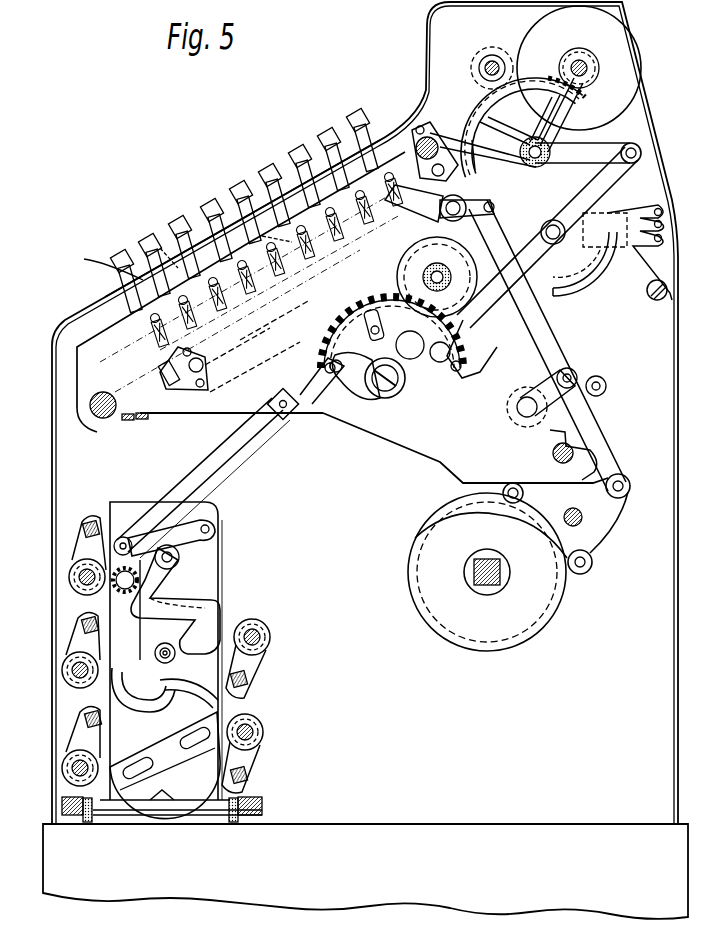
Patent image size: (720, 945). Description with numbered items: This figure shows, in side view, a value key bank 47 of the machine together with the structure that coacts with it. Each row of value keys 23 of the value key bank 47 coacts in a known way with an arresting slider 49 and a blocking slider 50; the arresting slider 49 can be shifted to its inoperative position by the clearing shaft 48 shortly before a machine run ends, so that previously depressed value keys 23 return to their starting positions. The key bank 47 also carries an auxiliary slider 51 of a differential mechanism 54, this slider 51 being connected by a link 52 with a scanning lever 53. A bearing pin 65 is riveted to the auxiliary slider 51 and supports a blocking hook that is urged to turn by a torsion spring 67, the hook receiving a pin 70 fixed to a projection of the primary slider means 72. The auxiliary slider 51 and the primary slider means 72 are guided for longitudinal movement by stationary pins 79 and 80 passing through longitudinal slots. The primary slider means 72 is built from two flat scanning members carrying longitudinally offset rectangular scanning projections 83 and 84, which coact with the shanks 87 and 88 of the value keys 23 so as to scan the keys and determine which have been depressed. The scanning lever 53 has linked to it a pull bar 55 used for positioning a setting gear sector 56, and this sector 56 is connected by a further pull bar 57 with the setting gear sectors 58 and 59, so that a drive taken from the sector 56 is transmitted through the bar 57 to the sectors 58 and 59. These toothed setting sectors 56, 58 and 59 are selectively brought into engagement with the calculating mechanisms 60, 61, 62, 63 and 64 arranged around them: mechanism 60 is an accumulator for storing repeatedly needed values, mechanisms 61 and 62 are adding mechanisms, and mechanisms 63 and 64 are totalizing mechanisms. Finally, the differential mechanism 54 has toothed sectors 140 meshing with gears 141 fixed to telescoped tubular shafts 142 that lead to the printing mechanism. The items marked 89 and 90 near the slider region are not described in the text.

The value keys 23 is at (340, 118).
The value key bank 47 is at (85, 370).
The clearing shaft 48 is at (430, 135).
The arresting slider 49 is at (167, 241).
The blocking slider 50 is at (274, 259).
The auxiliary slider 51 is at (318, 366).
The link 52 is at (290, 427).
The scanning lever 53 is at (350, 390).
The differential mechanism 54 is at (383, 398).
The pull bar 55 is at (227, 467).
The setting gear sector 56 is at (118, 602).
The pull bar 57 is at (143, 638).
The setting gear sector 58 is at (223, 608).
The setting gear sector 59 is at (217, 717).
The calculating mechanism 60 is at (68, 572).
The calculating mechanism 61 is at (63, 666).
The calculating mechanism 62 is at (270, 635).
The calculating mechanism 63 is at (63, 770).
The calculating mechanism 64 is at (264, 740).
The bearing pin 65 is at (255, 440).
The torsion spring 67 is at (240, 370).
The pin 70 is at (196, 417).
The primary slider means 72 is at (140, 385).
The stationary pin 79 is at (237, 338).
The stationary pin 80 is at (352, 298).
The scanning projection 83 is at (265, 323).
The scanning projection 84 is at (272, 236).
The shank 87 is at (109, 257).
The shank 88 is at (380, 128).
The contact 89 is at (167, 417).
The contact 90 is at (125, 420).
The toothed sector 140 is at (413, 363).
The gear 141 is at (463, 275).
The tubular shaft 142 is at (453, 287).